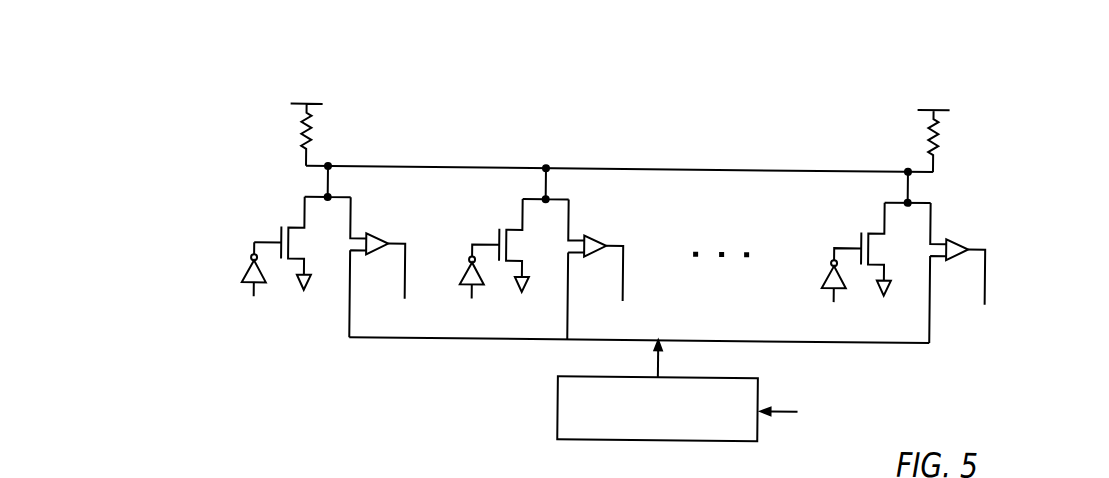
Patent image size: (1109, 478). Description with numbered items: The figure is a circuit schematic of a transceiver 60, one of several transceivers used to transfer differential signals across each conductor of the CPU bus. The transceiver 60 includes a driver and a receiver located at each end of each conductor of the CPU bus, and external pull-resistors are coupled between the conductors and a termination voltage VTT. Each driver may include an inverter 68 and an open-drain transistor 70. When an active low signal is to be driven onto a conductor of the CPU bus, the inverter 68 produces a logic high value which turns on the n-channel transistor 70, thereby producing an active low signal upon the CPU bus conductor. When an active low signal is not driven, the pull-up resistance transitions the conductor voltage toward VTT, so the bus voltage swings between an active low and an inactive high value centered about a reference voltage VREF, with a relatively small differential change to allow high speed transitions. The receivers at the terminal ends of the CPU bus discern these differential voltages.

The transceiver 60 is at (931, 52).
The inverter 68 is at (247, 272).
The open-drain transistor 70 is at (312, 247).